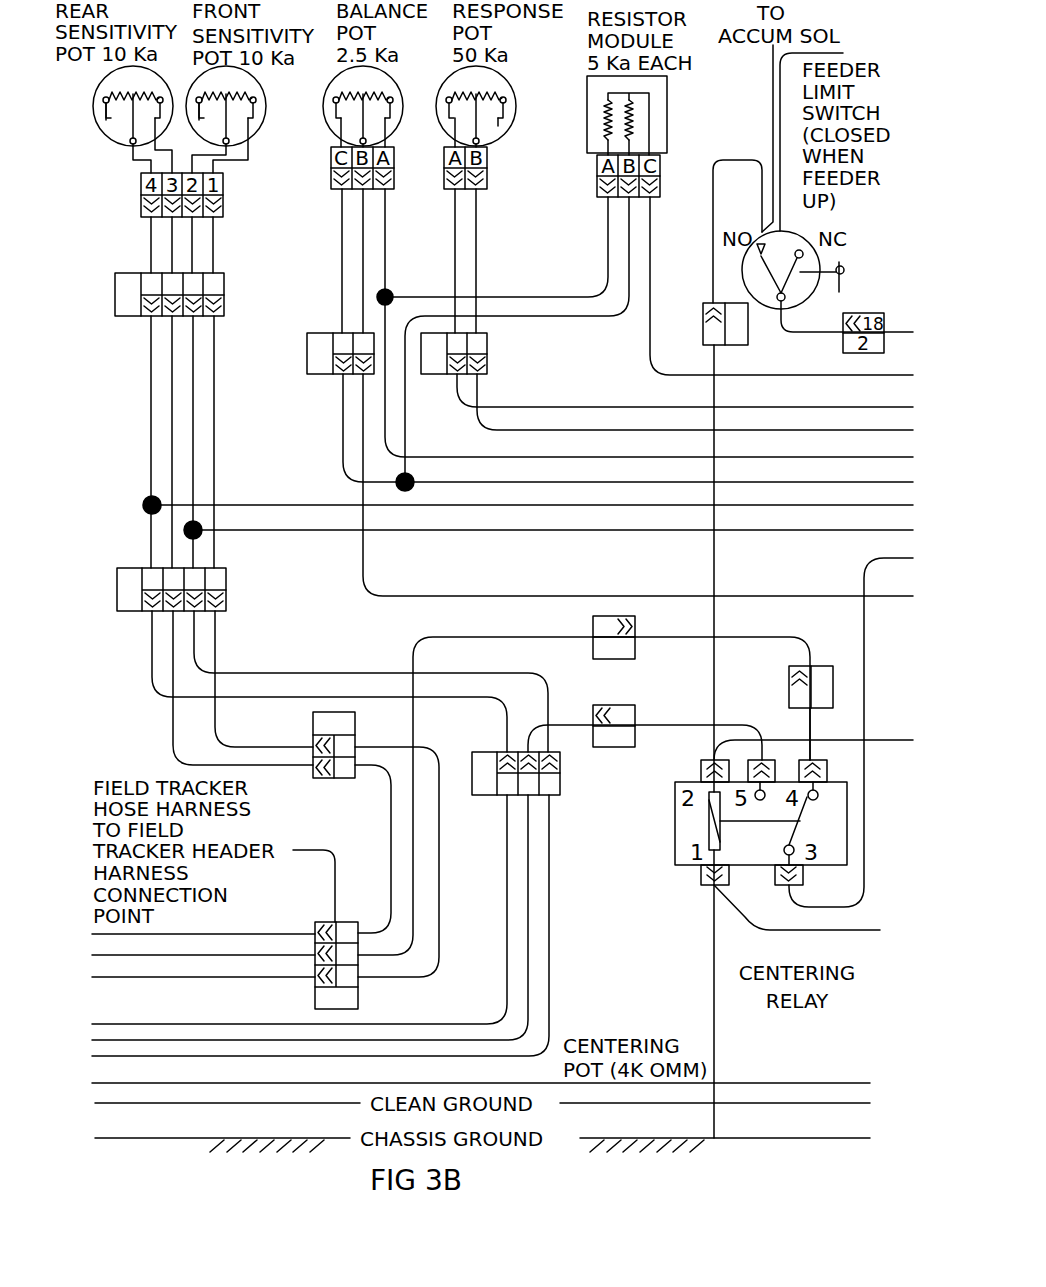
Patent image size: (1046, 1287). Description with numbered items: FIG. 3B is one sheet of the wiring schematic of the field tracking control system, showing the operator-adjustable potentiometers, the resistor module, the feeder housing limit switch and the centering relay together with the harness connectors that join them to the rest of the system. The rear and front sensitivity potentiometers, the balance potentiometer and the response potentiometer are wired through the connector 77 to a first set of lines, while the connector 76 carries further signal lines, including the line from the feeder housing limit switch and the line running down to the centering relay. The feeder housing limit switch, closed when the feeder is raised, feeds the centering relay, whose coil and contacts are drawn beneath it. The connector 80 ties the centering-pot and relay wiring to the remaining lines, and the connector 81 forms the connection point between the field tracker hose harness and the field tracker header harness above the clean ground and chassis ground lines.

The harness connector 76 is at (475, 534).
The harness connector 77 is at (301, 323).
The harness connector 80 is at (451, 836).
The field tracker header harness connector 81 is at (225, 929).